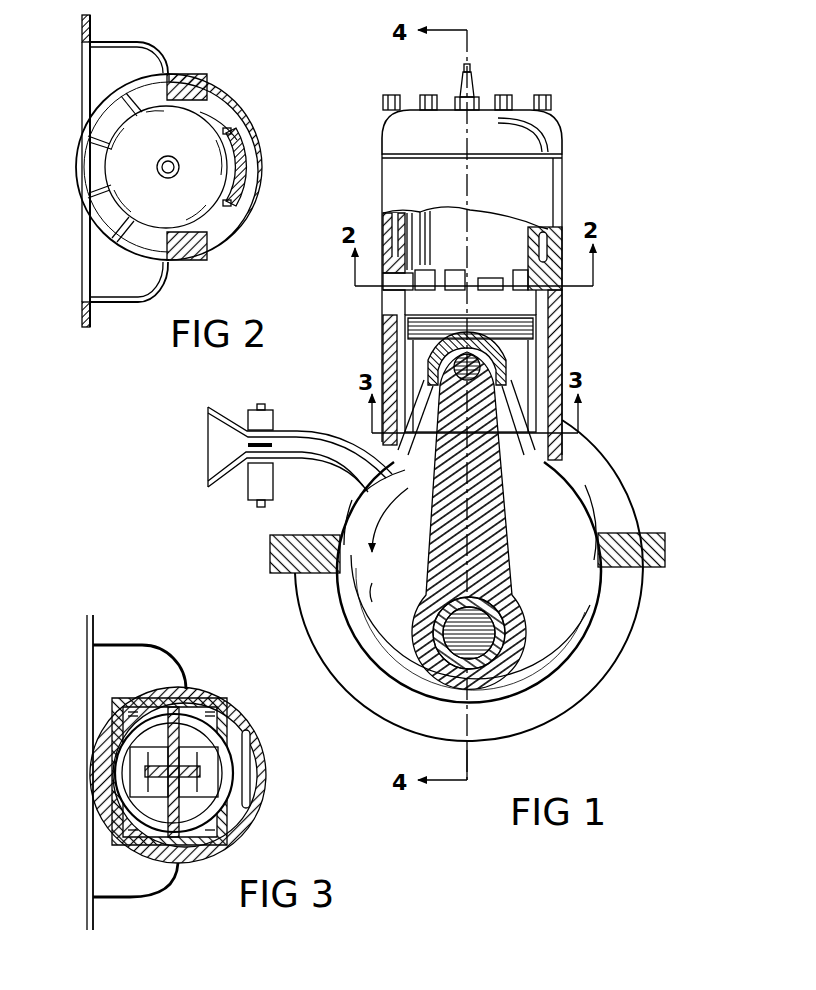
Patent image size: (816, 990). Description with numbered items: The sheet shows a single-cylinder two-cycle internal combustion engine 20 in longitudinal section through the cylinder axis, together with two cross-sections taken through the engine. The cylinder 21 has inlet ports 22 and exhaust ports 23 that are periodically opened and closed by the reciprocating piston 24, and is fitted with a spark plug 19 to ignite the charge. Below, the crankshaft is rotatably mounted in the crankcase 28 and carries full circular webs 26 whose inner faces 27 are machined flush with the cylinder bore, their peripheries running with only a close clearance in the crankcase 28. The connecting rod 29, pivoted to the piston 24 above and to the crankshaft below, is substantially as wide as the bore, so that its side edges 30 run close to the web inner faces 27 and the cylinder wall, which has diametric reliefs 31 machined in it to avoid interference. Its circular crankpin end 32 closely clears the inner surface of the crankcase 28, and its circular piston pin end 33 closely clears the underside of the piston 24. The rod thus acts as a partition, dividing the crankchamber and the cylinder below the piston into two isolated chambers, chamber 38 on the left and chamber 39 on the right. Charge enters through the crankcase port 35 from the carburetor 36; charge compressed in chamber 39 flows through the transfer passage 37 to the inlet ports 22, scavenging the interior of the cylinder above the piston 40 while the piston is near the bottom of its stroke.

In FIG. 1, the spark plug 19 is at (472, 90).
In FIG. 2, the spark plug 19 is at (171, 160).
In FIG. 1, the two-cycle internal combustion engine 20 is at (526, 555).
In FIG. 1, the cylinder 21 is at (382, 350).
In FIG. 2, the cylinder 21 is at (217, 247).
In FIG. 3, the cylinder 21 is at (104, 795).
In FIG. 1, the inlet ports 22 is at (546, 262).
In FIG. 2, the inlet ports 22 is at (215, 118).
In FIG. 1, the exhaust ports 23 is at (425, 296).
In FIG. 2, the exhaust ports 23 is at (110, 120).
In FIG. 1, the piston 24 is at (517, 361).
In FIG. 3, the piston 24 is at (120, 745).
In FIG. 1, the crankshaft webs 26 is at (600, 480).
In FIG. 1, the inner faces of the crankshaft webs 27 is at (600, 500).
In FIG. 1, the crankcase 28 is at (598, 636).
In FIG. 1, the connecting rod 29 is at (497, 553).
In FIG. 3, the connecting rod 29 is at (185, 760).
In FIG. 3, the side edges of the connecting rod 30 is at (160, 672).
In FIG. 1, the diametric reliefs 31 is at (400, 395).
In FIG. 3, the diametric reliefs 31 is at (212, 700).
In FIG. 1, the crankpin end 32 is at (560, 677).
In FIG. 1, the piston pin end 33 is at (500, 345).
In FIG. 3, the piston pin end 33 is at (195, 745).
In FIG. 1, the crankcase port 35 is at (327, 467).
In FIG. 1, the carburetor 36 is at (251, 480).
In FIG. 1, the transfer passage 37 is at (542, 366).
In FIG. 2, the transfer passage 37 is at (246, 170).
In FIG. 3, the transfer passage 37 is at (250, 772).
In FIG. 1, the chamber 38 is at (372, 597).
In FIG. 1, the chamber 39 is at (578, 596).
In FIG. 1, the interior of the cylinder above the piston 40 is at (500, 232).
In FIG. 2, the interior of the cylinder above the piston 40 is at (205, 157).